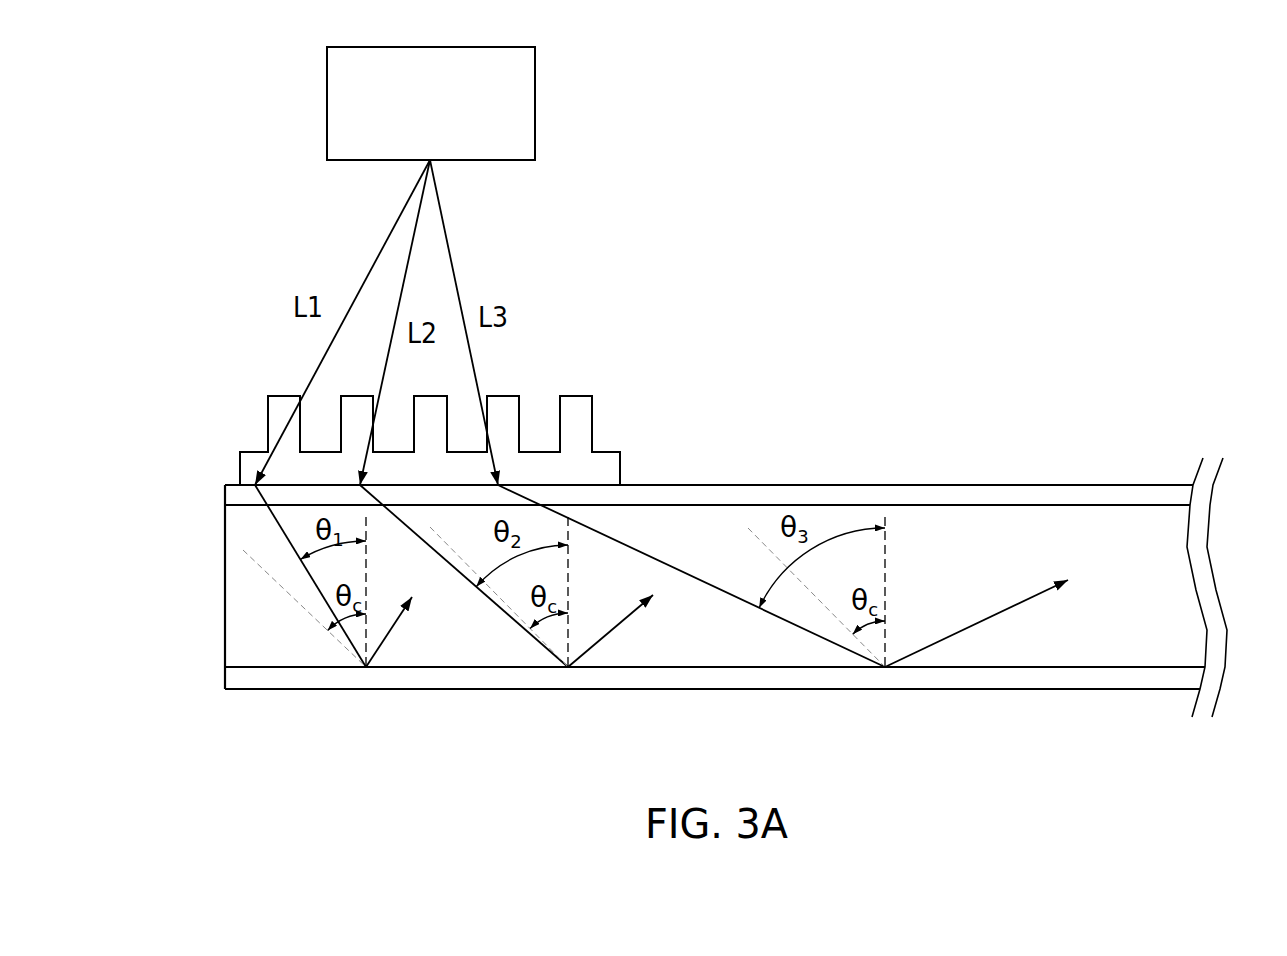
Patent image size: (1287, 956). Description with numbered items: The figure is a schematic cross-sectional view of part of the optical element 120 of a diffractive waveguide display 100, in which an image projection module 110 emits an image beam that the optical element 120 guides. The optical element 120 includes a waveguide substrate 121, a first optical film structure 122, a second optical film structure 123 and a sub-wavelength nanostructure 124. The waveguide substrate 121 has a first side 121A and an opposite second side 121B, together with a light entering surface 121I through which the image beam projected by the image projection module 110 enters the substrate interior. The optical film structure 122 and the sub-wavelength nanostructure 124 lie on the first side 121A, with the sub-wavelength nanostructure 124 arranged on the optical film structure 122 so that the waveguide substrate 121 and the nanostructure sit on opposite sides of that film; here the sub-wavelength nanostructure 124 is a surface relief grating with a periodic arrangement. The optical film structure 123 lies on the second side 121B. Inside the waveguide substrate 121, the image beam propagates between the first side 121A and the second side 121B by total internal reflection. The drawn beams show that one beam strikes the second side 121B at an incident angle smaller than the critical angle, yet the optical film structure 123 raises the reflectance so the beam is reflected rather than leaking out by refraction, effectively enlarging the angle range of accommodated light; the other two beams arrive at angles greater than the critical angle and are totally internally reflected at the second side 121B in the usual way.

The diffractive waveguide display 100 is at (1098, 58).
The image projection module 110 is at (325, 102).
The optical element 120 is at (1178, 368).
The waveguide substrate 121 is at (237, 598).
The first side 121A is at (1090, 505).
The second side 121B is at (1088, 669).
The light entering surface 121I is at (423, 512).
The optical film structure 122 is at (237, 497).
The optical film structure 123 is at (237, 678).
The sub-wavelength nanostructure 124 is at (277, 412).